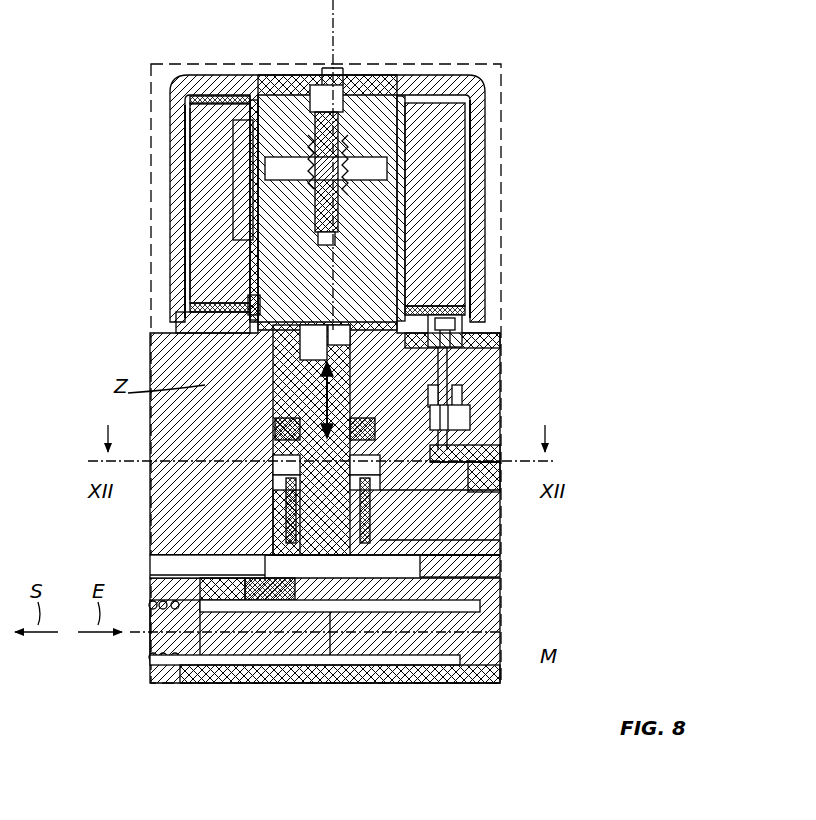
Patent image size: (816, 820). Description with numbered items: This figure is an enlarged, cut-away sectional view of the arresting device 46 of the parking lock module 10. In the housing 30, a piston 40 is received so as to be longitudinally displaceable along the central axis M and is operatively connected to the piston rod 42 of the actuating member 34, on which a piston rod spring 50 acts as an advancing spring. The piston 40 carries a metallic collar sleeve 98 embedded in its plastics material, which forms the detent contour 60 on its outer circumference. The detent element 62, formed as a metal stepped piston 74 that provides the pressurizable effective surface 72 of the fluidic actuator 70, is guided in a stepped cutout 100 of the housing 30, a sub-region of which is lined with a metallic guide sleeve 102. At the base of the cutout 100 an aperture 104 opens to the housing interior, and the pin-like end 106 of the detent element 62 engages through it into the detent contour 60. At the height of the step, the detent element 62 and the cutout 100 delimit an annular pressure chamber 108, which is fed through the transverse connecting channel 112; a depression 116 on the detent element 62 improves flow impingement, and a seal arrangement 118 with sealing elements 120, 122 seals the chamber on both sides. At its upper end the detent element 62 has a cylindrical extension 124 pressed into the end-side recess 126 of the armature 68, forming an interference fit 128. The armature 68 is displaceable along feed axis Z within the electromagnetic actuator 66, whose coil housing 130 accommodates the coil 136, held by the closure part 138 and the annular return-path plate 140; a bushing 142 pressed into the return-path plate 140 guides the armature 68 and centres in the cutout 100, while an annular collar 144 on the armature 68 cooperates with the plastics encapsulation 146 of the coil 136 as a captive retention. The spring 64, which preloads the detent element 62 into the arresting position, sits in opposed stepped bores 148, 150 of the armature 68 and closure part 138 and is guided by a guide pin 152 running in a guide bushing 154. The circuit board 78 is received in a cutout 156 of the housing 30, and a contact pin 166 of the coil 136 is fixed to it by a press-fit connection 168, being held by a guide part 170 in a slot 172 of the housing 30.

The parking lock module 10 is at (516, 108).
The housing 30 is at (150, 345).
The actuating member 34 is at (170, 665).
The piston 40 is at (505, 608).
The piston rod 42 is at (235, 665).
The arresting device 46 is at (468, 172).
The piston rod spring 50 is at (198, 605).
The detent contour 60 is at (272, 570).
The detent element 62 is at (272, 440).
The spring 64 is at (368, 88).
The electromagnetic actuator 66 is at (440, 252).
The armature 68 is at (428, 235).
The fluidic actuator 70 is at (270, 470).
The effective surface 72 is at (268, 475).
The stepped piston 74 is at (258, 340).
The circuit board 78 is at (485, 452).
The collar sleeve 98 is at (410, 665).
The stepped cutout 100 is at (460, 350).
The guide sleeve 102 is at (500, 555).
The aperture 104 is at (488, 622).
The pin-like end 106 is at (330, 612).
The annular pressure chamber 108 is at (375, 460).
The connecting channel 112 is at (272, 500).
The depression 116 is at (500, 528).
The seal arrangement 118 is at (268, 420).
The sealing element 120 is at (265, 563).
The sealing element 122 is at (462, 395).
The cylindrical extension 124 is at (245, 312).
The end-side recess 126 is at (250, 312).
The interference fit 128 is at (428, 310).
The coil housing 130 is at (482, 80).
The coil 136 is at (175, 110).
The closure part 138 is at (232, 98).
The return-path plate 140 is at (252, 300).
The bushing 142 is at (254, 260).
The annular collar 144 is at (252, 205).
The plastics encapsulation 146 is at (228, 132).
The stepped bore 148 is at (300, 165).
The stepped bore 150 is at (322, 140).
The guide pin 152 is at (330, 85).
The guide bushing 154 is at (342, 135).
The cutout 156 is at (500, 472).
The contact pin 166 is at (450, 330).
The press-fit connection 168 is at (500, 462).
The guide part 170 is at (470, 345).
The slot 172 is at (455, 418).